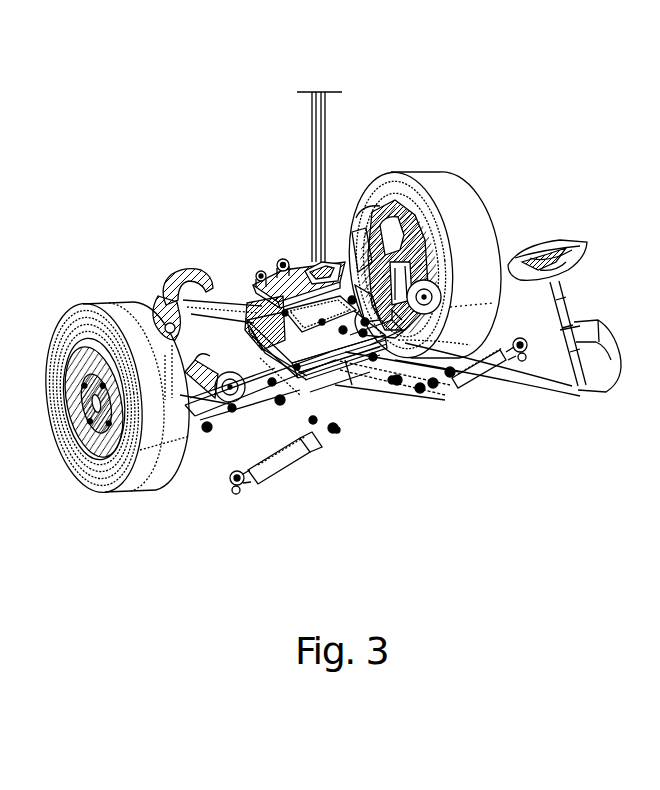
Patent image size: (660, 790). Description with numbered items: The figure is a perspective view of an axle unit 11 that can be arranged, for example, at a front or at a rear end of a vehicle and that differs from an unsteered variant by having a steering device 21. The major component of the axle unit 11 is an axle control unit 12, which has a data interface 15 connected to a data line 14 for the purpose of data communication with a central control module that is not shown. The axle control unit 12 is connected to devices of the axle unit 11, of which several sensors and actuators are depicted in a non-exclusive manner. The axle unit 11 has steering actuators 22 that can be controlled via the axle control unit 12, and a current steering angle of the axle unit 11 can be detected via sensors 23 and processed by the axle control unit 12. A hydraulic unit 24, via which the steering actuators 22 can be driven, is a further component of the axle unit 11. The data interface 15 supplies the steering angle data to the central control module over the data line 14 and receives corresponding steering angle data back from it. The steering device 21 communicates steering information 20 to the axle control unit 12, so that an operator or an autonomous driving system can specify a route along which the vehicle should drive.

The axle unit 11 is at (177, 245).
The axle control unit 12 is at (283, 283).
The data line 14 is at (324, 162).
The data interface 15 is at (313, 262).
The steering information 20 is at (600, 393).
The steering device 21 is at (575, 240).
The steering actuators 22 is at (280, 458).
The sensors 23 is at (400, 273).
The hydraulic unit 24 is at (272, 337).